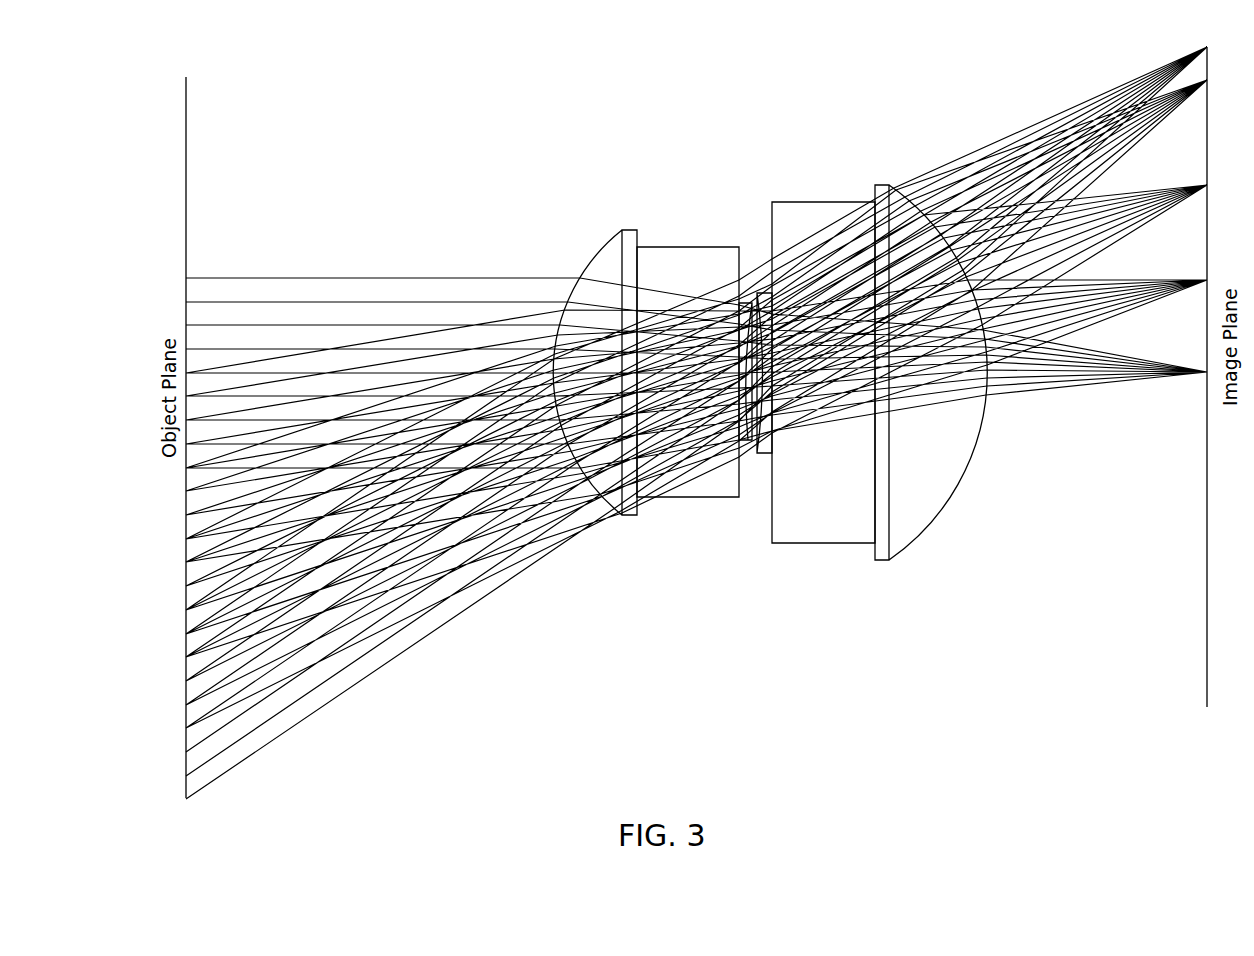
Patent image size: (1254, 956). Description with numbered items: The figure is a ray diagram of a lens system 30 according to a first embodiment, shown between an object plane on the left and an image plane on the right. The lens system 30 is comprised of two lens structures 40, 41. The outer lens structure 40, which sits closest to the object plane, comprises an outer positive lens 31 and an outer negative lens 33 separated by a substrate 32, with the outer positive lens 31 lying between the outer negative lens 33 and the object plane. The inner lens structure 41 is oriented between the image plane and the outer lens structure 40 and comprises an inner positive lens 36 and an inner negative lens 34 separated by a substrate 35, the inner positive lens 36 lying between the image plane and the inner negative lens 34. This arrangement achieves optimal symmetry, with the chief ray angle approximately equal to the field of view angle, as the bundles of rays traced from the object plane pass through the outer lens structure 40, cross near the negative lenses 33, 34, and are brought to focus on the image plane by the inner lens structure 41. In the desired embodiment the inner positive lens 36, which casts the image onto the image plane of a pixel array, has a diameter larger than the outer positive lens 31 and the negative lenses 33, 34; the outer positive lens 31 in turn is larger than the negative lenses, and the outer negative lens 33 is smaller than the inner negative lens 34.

The lens system 30 is at (528, 153).
The outer lens structure 40 is at (560, 247).
The inner lens structure 41 is at (972, 550).
The outer positive lens 31 is at (624, 276).
The substrate 32 is at (697, 284).
The outer negative lens 33 is at (745, 442).
The inner negative lens 34 is at (762, 291).
The substrate 35 is at (836, 486).
The inner positive lens 36 is at (932, 466).